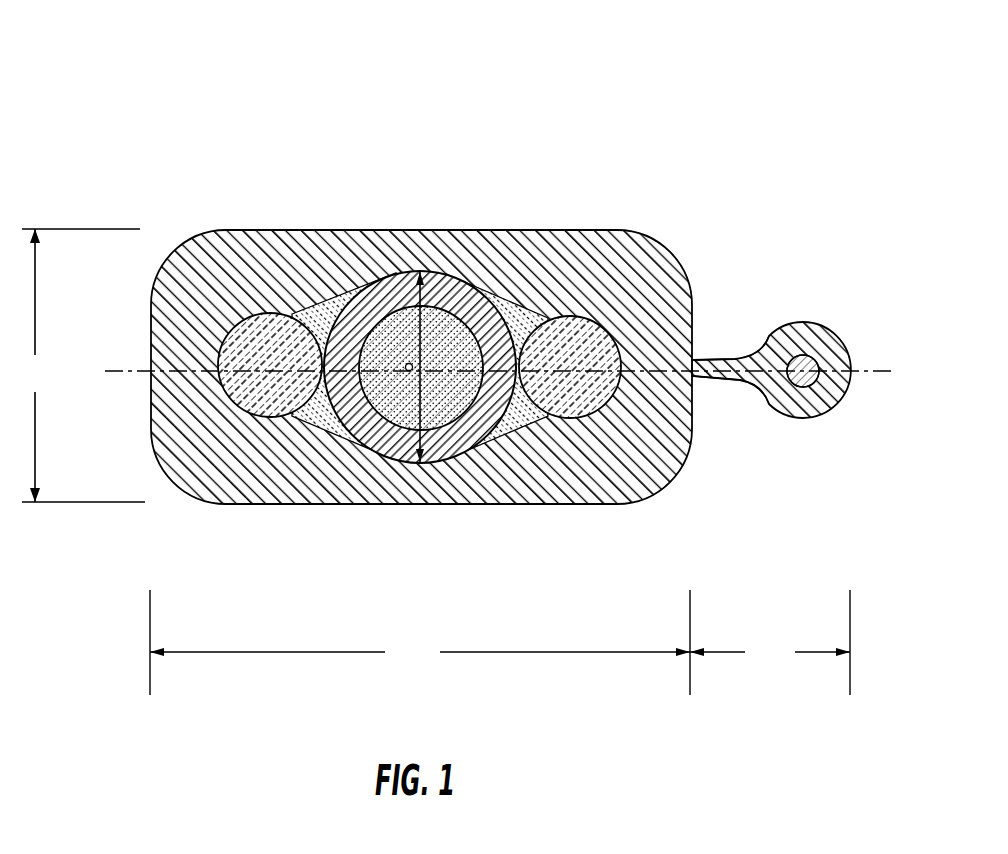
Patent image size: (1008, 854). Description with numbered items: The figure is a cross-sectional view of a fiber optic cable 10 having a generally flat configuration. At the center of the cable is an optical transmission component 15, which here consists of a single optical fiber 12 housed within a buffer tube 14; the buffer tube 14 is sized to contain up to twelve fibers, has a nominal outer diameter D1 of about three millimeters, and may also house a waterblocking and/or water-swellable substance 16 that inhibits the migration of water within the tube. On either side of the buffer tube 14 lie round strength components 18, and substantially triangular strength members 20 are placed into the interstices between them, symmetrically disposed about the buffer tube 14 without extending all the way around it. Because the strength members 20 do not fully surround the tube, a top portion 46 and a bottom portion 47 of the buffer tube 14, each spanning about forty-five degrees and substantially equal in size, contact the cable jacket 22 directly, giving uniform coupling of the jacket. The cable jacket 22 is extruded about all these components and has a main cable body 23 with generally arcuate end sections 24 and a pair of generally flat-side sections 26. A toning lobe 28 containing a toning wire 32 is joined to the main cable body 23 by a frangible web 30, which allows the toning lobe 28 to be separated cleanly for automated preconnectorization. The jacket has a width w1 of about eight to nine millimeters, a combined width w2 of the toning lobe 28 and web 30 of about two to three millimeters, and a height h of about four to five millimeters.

The fiber optic cable 10 is at (490, 322).
The optical fiber 12 is at (453, 457).
The buffer tube 14 is at (409, 372).
The optical transmission component 15 is at (488, 594).
The waterblocking and/or water-swellable substance 16 is at (520, 440).
The strength component 18 is at (264, 414).
The strength member 20 is at (347, 287).
The cable jacket 22 is at (212, 225).
The main cable body 23 is at (205, 465).
The end section 24 is at (150, 347).
The flat-side section 26 is at (400, 272).
The toning lobe 28 is at (818, 420).
The web 30 is at (728, 360).
The toning wire 32 is at (808, 356).
The top portion 46 is at (407, 266).
The bottom portion 47 is at (500, 440).
The nominal outer diameter D1 is at (462, 290).
The height h is at (83, 365).
The width w1 is at (420, 642).
The width w2 is at (770, 642).